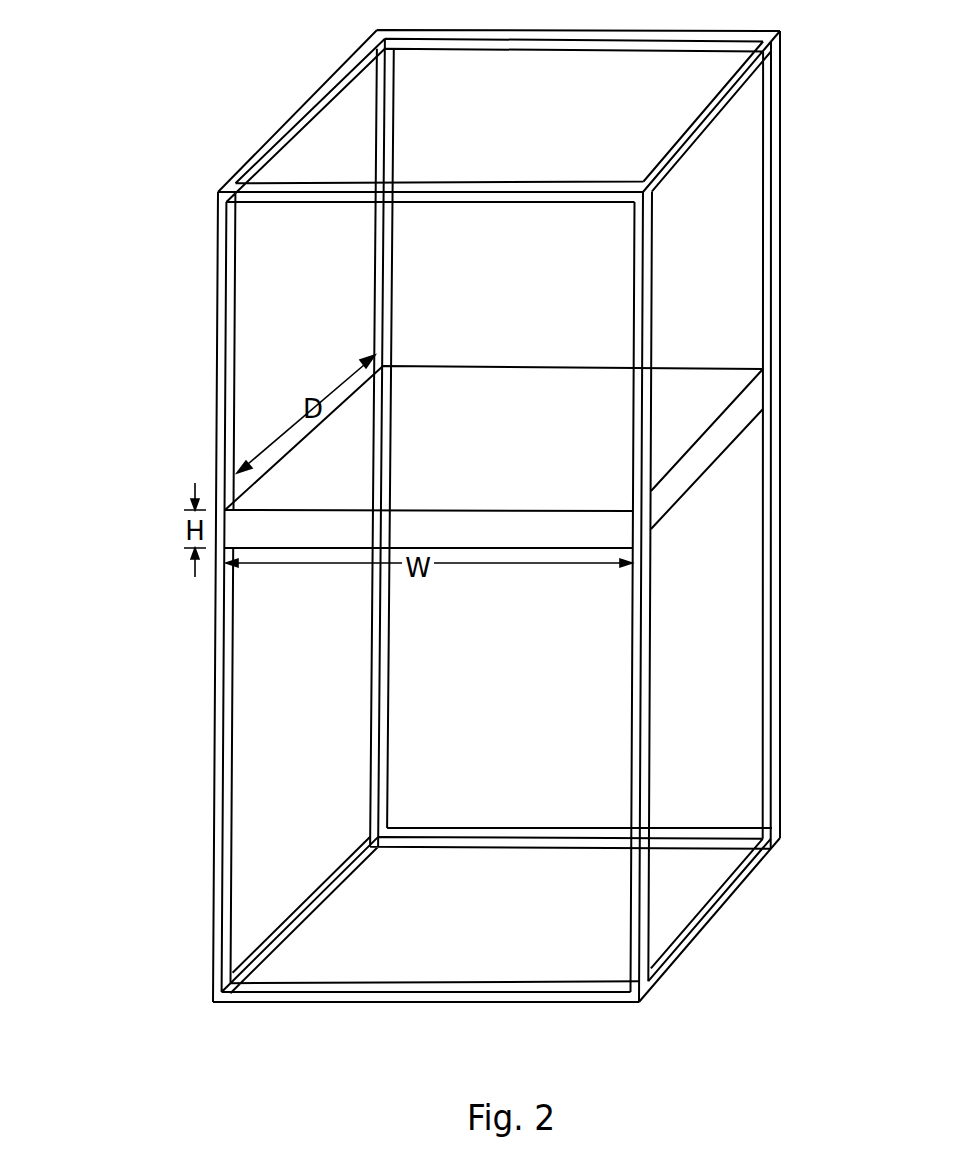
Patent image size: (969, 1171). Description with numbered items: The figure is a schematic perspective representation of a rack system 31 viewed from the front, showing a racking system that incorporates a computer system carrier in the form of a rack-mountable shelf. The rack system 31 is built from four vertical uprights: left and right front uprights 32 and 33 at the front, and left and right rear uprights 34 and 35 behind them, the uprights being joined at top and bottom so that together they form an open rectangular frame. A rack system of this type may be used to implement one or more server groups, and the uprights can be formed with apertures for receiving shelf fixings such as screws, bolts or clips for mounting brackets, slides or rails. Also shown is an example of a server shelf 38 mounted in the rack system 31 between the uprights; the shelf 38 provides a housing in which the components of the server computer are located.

The rack system 31 is at (129, 905).
The left front upright 32 is at (213, 842).
The right front upright 33 is at (650, 755).
The left rear upright 34 is at (389, 753).
The right rear upright 35 is at (780, 780).
The server shelf 38 is at (717, 448).